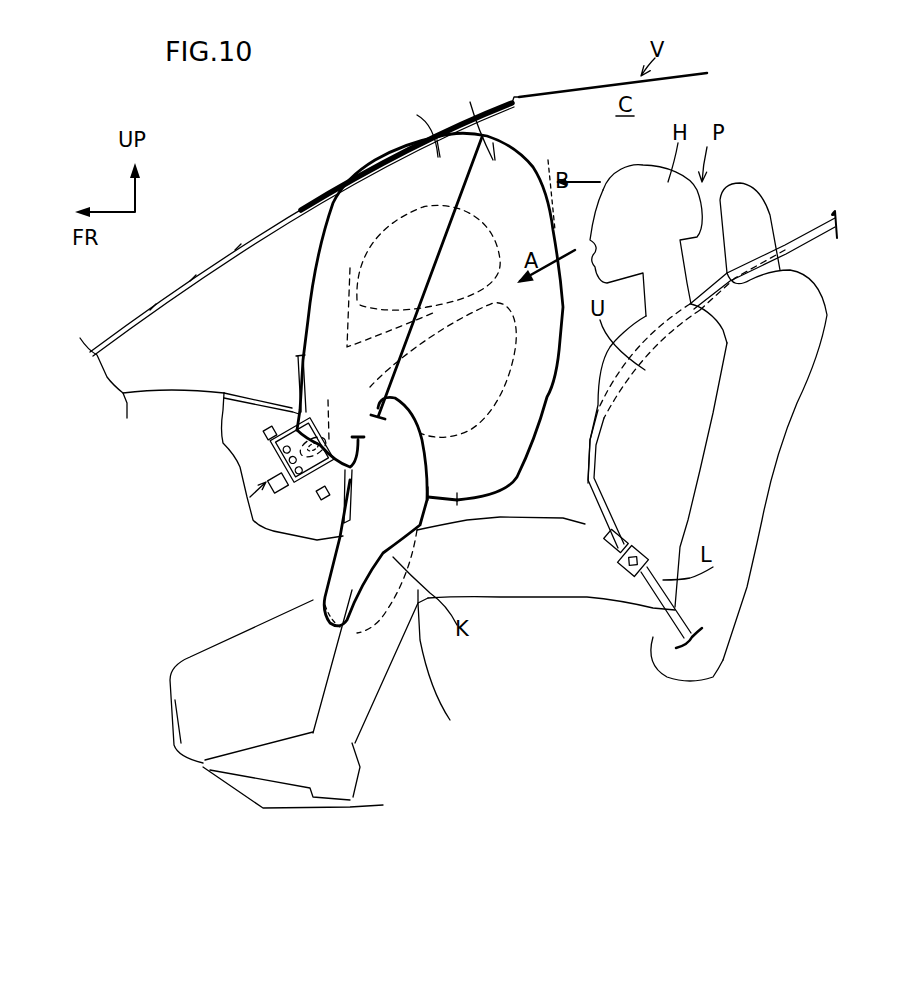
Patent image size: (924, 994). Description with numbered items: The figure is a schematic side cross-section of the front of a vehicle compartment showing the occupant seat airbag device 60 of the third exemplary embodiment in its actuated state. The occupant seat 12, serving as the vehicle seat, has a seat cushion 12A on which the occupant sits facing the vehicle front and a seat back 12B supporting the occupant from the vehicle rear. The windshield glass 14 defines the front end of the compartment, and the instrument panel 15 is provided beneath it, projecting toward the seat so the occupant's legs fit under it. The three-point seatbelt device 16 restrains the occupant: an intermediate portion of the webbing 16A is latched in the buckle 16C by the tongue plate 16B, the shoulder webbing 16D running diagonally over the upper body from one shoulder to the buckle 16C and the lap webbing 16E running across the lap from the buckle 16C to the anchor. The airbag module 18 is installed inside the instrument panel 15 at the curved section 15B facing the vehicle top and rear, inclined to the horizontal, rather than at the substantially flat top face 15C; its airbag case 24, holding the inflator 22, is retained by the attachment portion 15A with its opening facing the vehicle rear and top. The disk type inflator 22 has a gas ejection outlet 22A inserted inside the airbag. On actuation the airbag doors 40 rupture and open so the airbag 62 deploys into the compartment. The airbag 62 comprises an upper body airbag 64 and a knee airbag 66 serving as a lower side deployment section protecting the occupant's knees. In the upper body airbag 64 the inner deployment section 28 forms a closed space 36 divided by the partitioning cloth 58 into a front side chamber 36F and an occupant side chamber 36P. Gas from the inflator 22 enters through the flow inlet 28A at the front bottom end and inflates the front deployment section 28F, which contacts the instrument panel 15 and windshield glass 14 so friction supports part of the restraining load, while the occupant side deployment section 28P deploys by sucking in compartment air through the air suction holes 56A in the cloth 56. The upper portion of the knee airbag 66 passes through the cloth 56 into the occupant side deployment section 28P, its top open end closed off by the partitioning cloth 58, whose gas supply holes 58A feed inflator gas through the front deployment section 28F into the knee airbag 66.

The occupant seat 12 is at (769, 439).
The seat cushion 12A is at (744, 664).
The seat back 12B is at (740, 552).
The windshield glass 14 is at (260, 232).
The instrument panel 15 is at (211, 543).
The attachment portion 15A is at (267, 440).
The curved section 15B is at (262, 395).
The top face 15C is at (160, 385).
The seatbelt device 16 is at (683, 407).
The webbing 16A is at (677, 483).
The tongue plate 16B is at (607, 543).
The buckle 16C is at (622, 570).
The shoulder webbing 16D is at (600, 473).
The lap webbing 16E is at (620, 508).
The airbag module 18 is at (263, 504).
The inflator 22 is at (260, 520).
The gas ejection outlet 22A is at (283, 523).
The airbag case 24 is at (263, 462).
The inner deployment section 28 is at (425, 359).
The flow inlet 28A is at (400, 316).
The front deployment section 28F is at (352, 204).
The occupant side deployment section 28P is at (457, 237).
The closed space 36 is at (406, 124).
The front side chamber 36F is at (432, 109).
The occupant side chamber 36P is at (468, 114).
The airbag doors 40 is at (299, 356).
The cloth 56 is at (537, 450).
The air suction holes 56A is at (442, 500).
The partitioning cloth 58 is at (477, 162).
The gas supply holes 58A is at (367, 427).
The occupant seat airbag device 60 is at (541, 107).
The airbag 62 is at (323, 425).
The upper body airbag 64 is at (541, 152).
The knee airbag 66 is at (308, 626).